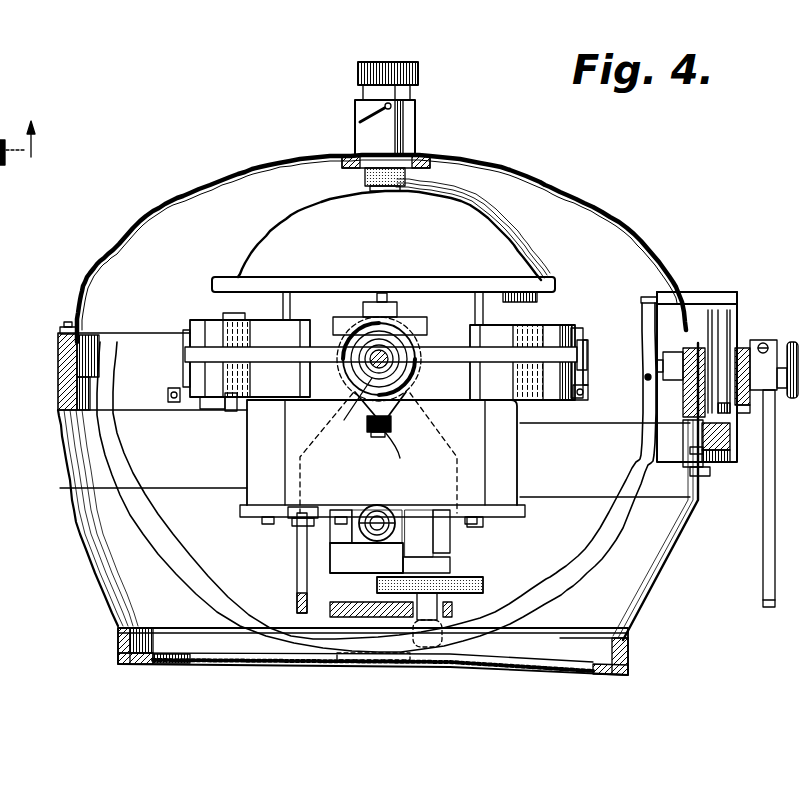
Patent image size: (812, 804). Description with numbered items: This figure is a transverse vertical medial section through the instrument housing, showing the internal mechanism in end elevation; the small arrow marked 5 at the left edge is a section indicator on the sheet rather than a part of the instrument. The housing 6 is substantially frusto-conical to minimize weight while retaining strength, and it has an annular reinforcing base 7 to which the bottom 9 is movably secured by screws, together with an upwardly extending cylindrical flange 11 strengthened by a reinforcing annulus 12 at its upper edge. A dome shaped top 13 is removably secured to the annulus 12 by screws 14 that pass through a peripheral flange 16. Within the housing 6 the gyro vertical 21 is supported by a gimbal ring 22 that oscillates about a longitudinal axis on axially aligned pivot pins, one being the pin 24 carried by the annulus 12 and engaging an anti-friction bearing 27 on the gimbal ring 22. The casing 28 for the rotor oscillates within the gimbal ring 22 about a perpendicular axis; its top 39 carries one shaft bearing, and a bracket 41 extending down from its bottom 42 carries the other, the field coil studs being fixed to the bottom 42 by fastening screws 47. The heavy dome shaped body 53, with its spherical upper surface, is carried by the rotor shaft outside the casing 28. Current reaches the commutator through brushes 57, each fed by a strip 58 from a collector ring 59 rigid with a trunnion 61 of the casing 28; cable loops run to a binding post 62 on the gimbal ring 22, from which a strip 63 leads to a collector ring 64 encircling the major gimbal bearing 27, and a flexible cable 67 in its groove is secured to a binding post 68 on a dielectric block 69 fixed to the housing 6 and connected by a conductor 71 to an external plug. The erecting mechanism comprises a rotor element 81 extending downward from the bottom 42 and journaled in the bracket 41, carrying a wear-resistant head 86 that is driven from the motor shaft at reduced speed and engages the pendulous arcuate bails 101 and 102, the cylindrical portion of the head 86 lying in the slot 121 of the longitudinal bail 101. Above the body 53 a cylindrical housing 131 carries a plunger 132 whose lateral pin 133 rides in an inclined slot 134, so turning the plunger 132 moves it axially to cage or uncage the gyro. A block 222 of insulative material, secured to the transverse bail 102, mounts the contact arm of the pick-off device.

The section line 5- 5 is at (17, 152).
The housing 6 is at (84, 564).
The annular reinforcing base 7 is at (118, 648).
The bottom 9 is at (184, 672).
The cylindrical flange 11 is at (58, 450).
The reinforcing annulus 12 is at (58, 378).
The dome shaped top 13 is at (207, 184).
The screws 14 is at (65, 327).
The peripheral flange 16 is at (60, 331).
The gyro vertical 21 is at (560, 318).
The gimbal ring 22 is at (562, 338).
The pivot pin 24 is at (348, 408).
The anti-friction bearing 27 is at (428, 328).
The rotor-bearing casing 28 is at (378, 453).
The top 39 is at (232, 273).
The bracket 41 is at (330, 558).
The bottom 42 is at (247, 513).
The fastening screws 47 is at (300, 530).
The body 53 is at (302, 216).
The brushes 57 is at (392, 512).
The strip 58 is at (245, 460).
The collector ring 59 is at (230, 313).
The trunnion 61 is at (228, 411).
The binding post 62 is at (206, 405).
The strip 63 is at (276, 360).
The collector ring 64 is at (406, 366).
The flexible cable 67 is at (395, 404).
The binding post 68 is at (370, 437).
The block 69 is at (392, 428).
The conductor 71 is at (400, 446).
The rotor element 81 is at (452, 546).
The head 86 is at (430, 650).
The arcuate mass 101 is at (297, 590).
The arcuate mass 102 is at (596, 551).
The slot 121 is at (305, 612).
The cylindrical housing 131 is at (405, 124).
The plunger 132 is at (362, 90).
The pin 133 is at (410, 96).
The inclined slot 134 is at (358, 122).
The block 222 is at (652, 342).